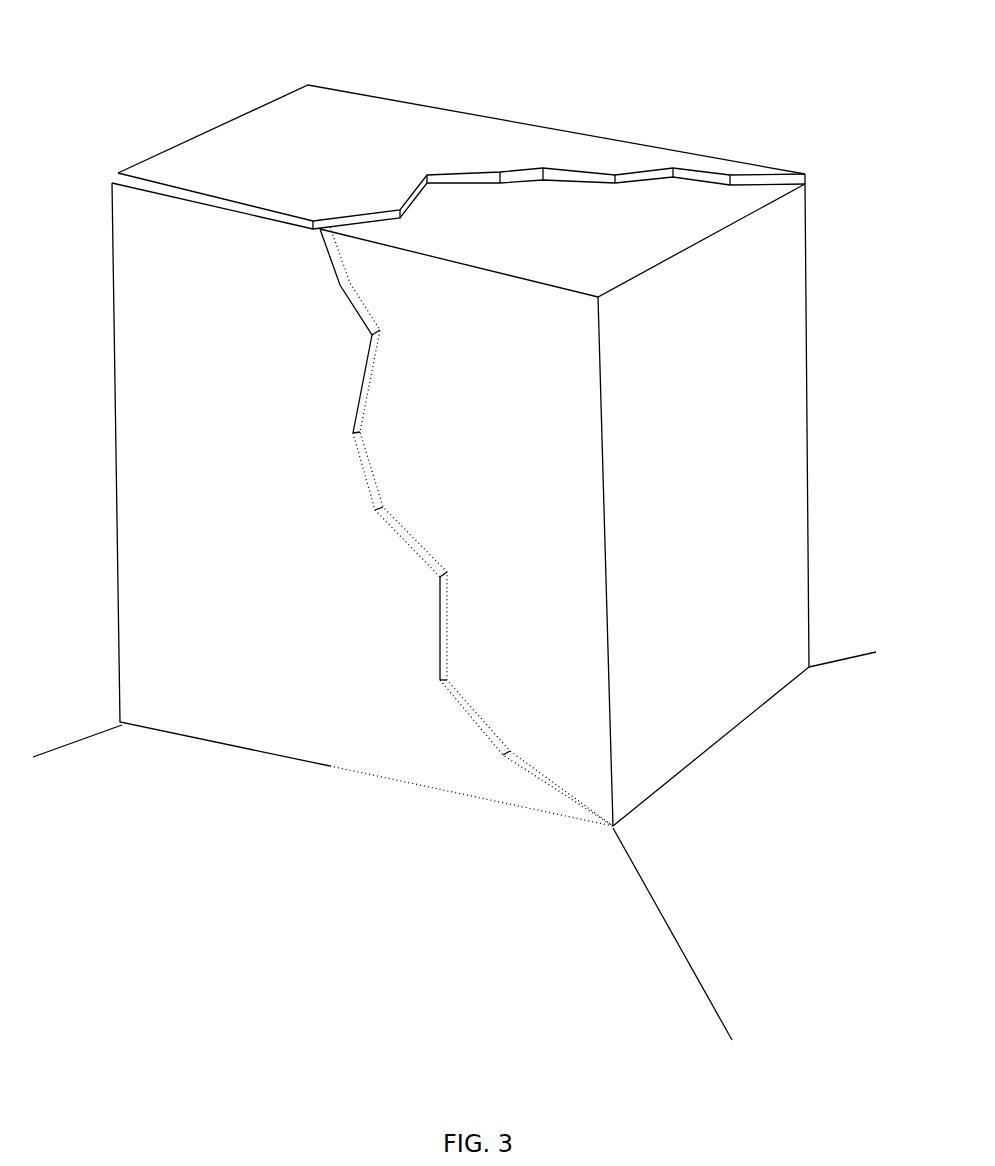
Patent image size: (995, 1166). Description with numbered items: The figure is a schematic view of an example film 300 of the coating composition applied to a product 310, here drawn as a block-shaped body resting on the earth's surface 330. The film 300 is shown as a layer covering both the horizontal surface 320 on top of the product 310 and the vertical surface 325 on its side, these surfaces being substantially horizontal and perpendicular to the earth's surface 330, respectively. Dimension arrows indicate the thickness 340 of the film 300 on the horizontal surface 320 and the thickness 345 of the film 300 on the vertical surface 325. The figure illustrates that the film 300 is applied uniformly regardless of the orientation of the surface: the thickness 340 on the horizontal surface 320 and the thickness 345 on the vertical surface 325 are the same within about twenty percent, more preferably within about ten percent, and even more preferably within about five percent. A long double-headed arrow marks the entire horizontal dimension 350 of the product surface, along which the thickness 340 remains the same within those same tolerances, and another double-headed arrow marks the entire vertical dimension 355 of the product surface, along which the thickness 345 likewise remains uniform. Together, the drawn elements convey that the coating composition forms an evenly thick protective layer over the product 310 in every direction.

The film 300 is at (468, 67).
The product 310 is at (808, 232).
The horizontal surface 320 is at (637, 238).
The vertical surface 325 is at (558, 452).
The earth's surface 330 is at (350, 841).
The thickness 340 is at (467, 213).
The thickness 345 is at (328, 318).
The horizontal dimension 350 is at (393, 107).
The vertical dimension 355 is at (210, 214).